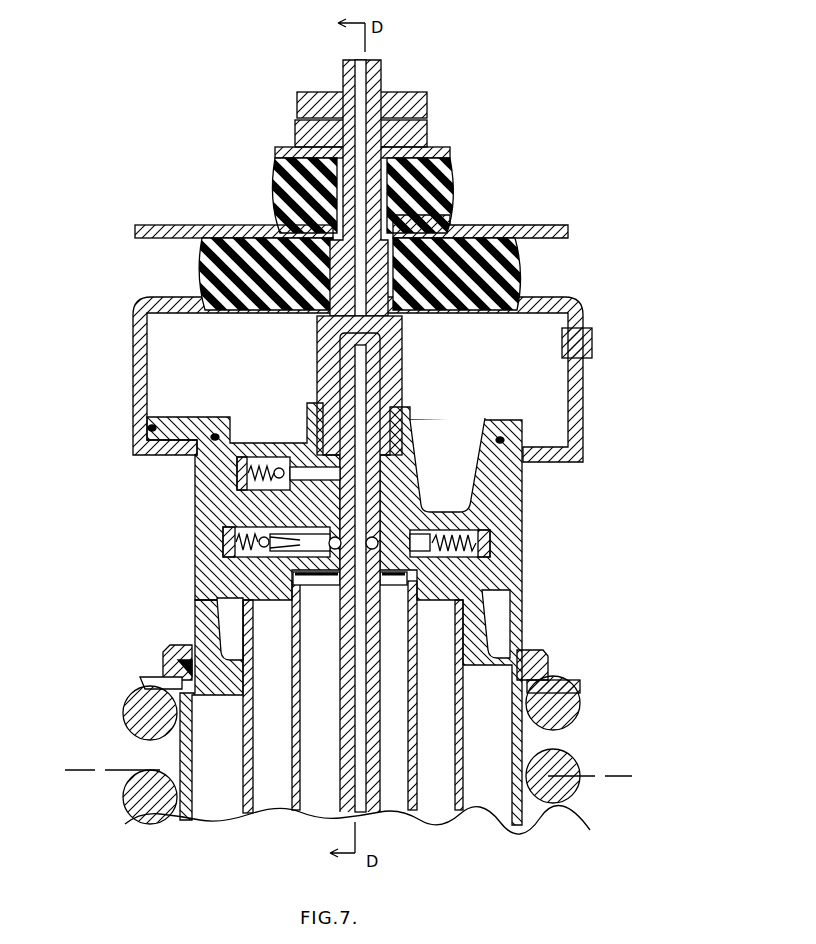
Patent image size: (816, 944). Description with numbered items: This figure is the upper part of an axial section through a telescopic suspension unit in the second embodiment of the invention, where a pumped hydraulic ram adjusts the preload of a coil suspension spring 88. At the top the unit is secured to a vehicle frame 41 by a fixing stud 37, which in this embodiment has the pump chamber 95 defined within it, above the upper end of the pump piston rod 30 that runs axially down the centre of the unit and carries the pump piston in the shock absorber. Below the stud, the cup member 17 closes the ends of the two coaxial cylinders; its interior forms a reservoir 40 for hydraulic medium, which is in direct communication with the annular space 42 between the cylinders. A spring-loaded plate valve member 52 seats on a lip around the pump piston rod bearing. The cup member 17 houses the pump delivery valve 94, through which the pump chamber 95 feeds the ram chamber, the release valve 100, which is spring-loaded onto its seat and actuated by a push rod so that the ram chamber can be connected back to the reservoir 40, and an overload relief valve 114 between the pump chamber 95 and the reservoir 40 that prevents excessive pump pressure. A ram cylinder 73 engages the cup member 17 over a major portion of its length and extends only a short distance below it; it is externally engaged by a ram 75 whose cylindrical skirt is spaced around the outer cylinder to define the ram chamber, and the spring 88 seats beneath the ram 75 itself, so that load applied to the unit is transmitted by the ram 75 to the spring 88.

The cup member 17 is at (495, 488).
The pump piston rod 30 is at (340, 758).
The fixing stud 37 is at (345, 246).
The reservoir 40 is at (507, 366).
The vehicle frame 41 is at (507, 230).
The annular space 42 is at (449, 664).
The spring-loaded plate valve member 52 is at (400, 590).
The ram cylinder 73 is at (202, 582).
The ram 75 is at (177, 662).
The coil suspension spring 88 is at (133, 707).
The pump delivery valve 94 is at (236, 478).
The pump chamber 95 is at (322, 338).
The release valve 100 is at (222, 533).
The overload relief valve 114 is at (497, 537).